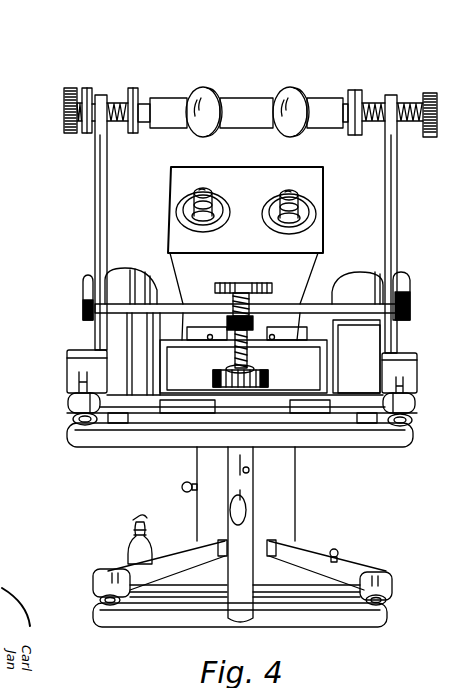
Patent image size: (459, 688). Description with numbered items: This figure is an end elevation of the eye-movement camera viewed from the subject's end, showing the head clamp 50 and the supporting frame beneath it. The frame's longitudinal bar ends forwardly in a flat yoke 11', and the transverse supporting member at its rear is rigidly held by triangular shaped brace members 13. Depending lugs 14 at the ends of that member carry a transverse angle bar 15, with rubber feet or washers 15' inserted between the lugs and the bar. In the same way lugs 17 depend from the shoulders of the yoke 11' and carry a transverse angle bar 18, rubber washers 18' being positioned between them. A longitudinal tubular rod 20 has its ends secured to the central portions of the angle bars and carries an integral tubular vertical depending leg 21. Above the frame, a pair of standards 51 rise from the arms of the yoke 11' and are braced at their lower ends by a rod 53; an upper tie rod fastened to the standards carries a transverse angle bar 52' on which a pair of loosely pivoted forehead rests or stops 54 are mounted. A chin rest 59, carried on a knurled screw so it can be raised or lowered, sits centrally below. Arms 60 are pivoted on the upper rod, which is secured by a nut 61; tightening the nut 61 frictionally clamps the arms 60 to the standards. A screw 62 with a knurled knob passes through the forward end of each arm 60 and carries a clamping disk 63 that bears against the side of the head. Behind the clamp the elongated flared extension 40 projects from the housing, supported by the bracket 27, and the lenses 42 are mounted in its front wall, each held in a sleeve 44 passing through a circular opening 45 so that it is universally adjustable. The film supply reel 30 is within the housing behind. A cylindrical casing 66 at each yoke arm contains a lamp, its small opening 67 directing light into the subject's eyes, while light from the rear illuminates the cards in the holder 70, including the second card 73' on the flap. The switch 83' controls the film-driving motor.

The flat yoke 11' is at (241, 371).
The triangular shaped brace members 13 is at (178, 539).
The depending lugs 14 is at (95, 590).
The transverse angle bar 15 is at (240, 633).
The rubber feet or washers 15' is at (242, 612).
The lugs 17 is at (72, 403).
The transverse angle bar 18 is at (261, 456).
The rubber washers 18' is at (234, 418).
The longitudinal tubular rod 20 is at (260, 476).
The tubular vertical depending leg 21 is at (255, 517).
The bracket 27 is at (195, 333).
The film supply reel 30 is at (454, 233).
The elongated flared extension 40 is at (248, 152).
The lenses 42 is at (297, 193).
The sleeve 44 is at (218, 222).
The circular opening 45 is at (208, 214).
The head clamp 50 is at (388, 220).
The standards 51 is at (100, 210).
The transverse angle bar 52' is at (243, 112).
The rod 53 is at (342, 319).
The forehead rests or stops 54 is at (213, 92).
The chin rest 59 is at (250, 285).
The arms 60 is at (110, 118).
The nut 61 is at (98, 94).
The screw 62 is at (83, 133).
The clamping disk 63 is at (143, 72).
The cylindrical casing 66 is at (88, 286).
The small opening 67 is at (160, 294).
The holder 70 is at (315, 342).
The second card 73' is at (265, 366).
The switch 83' is at (365, 547).